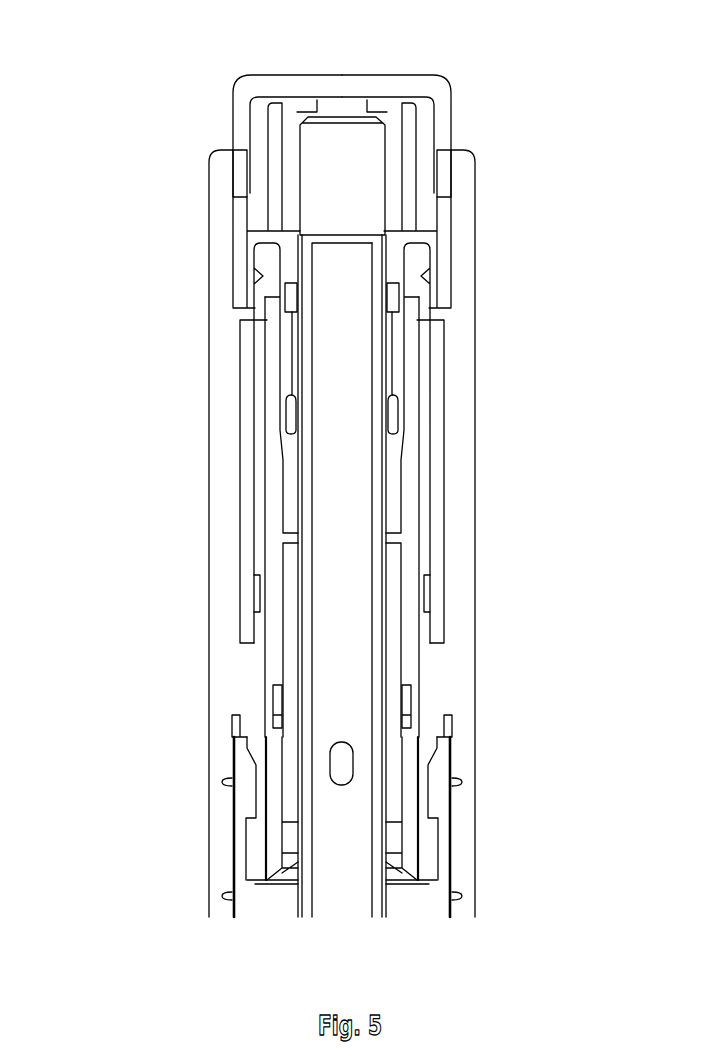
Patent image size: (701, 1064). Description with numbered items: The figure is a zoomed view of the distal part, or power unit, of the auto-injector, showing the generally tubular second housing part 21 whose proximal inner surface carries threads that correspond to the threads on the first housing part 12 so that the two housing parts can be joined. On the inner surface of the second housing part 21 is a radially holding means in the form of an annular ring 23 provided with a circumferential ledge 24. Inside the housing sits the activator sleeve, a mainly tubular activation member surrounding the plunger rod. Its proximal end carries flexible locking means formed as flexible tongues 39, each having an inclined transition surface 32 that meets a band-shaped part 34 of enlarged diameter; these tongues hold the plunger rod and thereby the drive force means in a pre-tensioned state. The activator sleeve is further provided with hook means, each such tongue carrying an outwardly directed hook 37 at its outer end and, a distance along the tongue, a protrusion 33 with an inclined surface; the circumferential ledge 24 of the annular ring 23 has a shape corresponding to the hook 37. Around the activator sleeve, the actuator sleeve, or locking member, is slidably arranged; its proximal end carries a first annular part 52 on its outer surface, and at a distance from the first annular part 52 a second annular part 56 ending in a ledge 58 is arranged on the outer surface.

The first housing part 12 is at (243, 795).
The second housing part 21 is at (220, 473).
The annular ring 23 is at (438, 308).
The circumferential ledge 24 is at (428, 292).
The inclined transition surface 32 is at (403, 835).
The protrusion 33 is at (422, 320).
The band-shaped part 34 is at (408, 860).
The hook 37 is at (420, 247).
The flexible tongues 39 is at (290, 665).
The first annular part 52 is at (262, 840).
The second annular part 56 is at (433, 682).
The ledge 58 is at (245, 746).